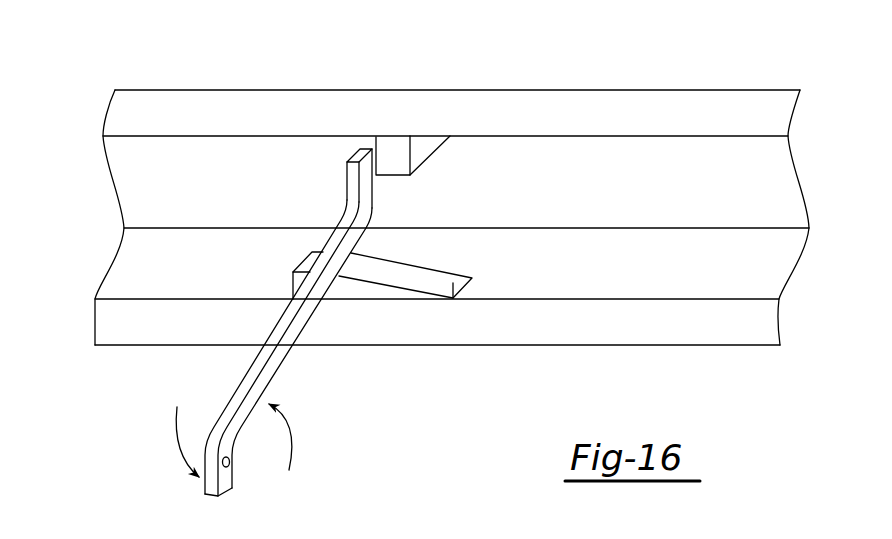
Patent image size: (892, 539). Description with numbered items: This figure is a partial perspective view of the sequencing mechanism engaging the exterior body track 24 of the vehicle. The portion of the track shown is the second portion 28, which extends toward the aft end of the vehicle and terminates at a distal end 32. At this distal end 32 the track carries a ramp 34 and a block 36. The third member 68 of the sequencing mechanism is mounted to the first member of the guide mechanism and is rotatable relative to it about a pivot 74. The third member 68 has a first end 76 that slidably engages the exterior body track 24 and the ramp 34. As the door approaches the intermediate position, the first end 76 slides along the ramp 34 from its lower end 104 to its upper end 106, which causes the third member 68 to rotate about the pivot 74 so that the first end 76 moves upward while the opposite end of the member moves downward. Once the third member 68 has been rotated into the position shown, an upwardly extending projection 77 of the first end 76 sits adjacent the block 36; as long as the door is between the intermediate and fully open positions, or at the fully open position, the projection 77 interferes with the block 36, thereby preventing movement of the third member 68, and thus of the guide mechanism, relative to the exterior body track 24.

The exterior body track 24 is at (622, 86).
The second portion 28 is at (560, 113).
The distal end 32 is at (197, 136).
The ramp 34 is at (294, 267).
The block 36 is at (430, 158).
The third member 68 is at (277, 362).
The pivot 74 is at (230, 463).
The first end 76 is at (368, 213).
The upwardly extending projection 77 is at (347, 172).
The lower end 104 is at (455, 286).
The upper end 106 is at (312, 263).